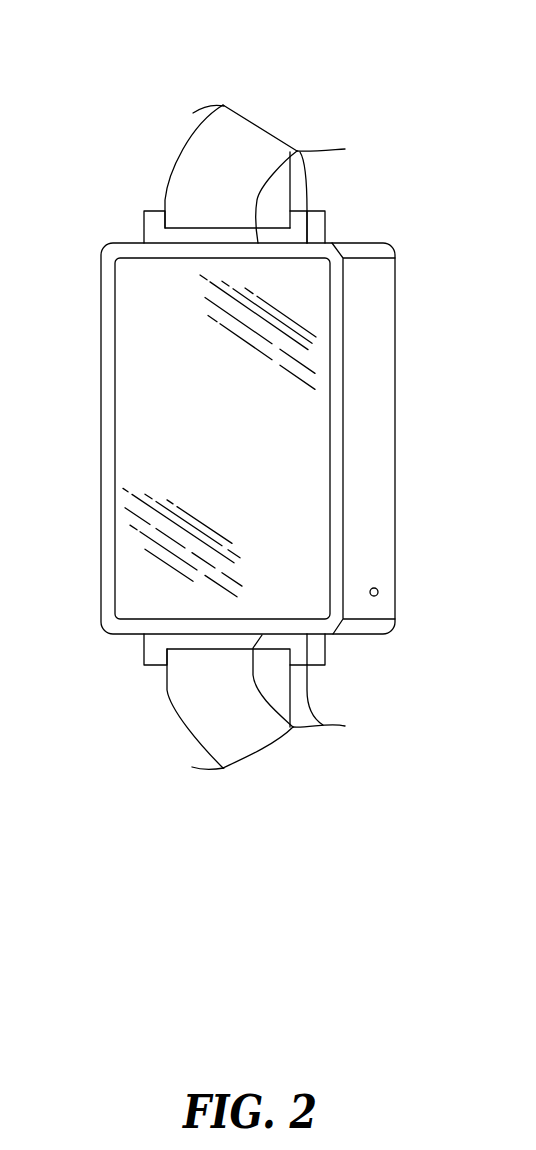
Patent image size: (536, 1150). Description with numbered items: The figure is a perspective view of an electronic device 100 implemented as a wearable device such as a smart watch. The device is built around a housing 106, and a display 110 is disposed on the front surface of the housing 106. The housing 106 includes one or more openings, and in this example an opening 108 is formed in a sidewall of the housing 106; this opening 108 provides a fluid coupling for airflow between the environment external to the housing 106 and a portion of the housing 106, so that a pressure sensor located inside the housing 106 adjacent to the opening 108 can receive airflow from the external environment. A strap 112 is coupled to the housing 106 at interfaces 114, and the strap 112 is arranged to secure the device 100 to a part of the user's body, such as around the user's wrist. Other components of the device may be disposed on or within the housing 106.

The electronic device 100 is at (258, 421).
The housing 106 is at (123, 637).
The opening 108 is at (378, 593).
The display 110 is at (130, 374).
The strap 112 is at (243, 141).
The interfaces 114 is at (295, 152).